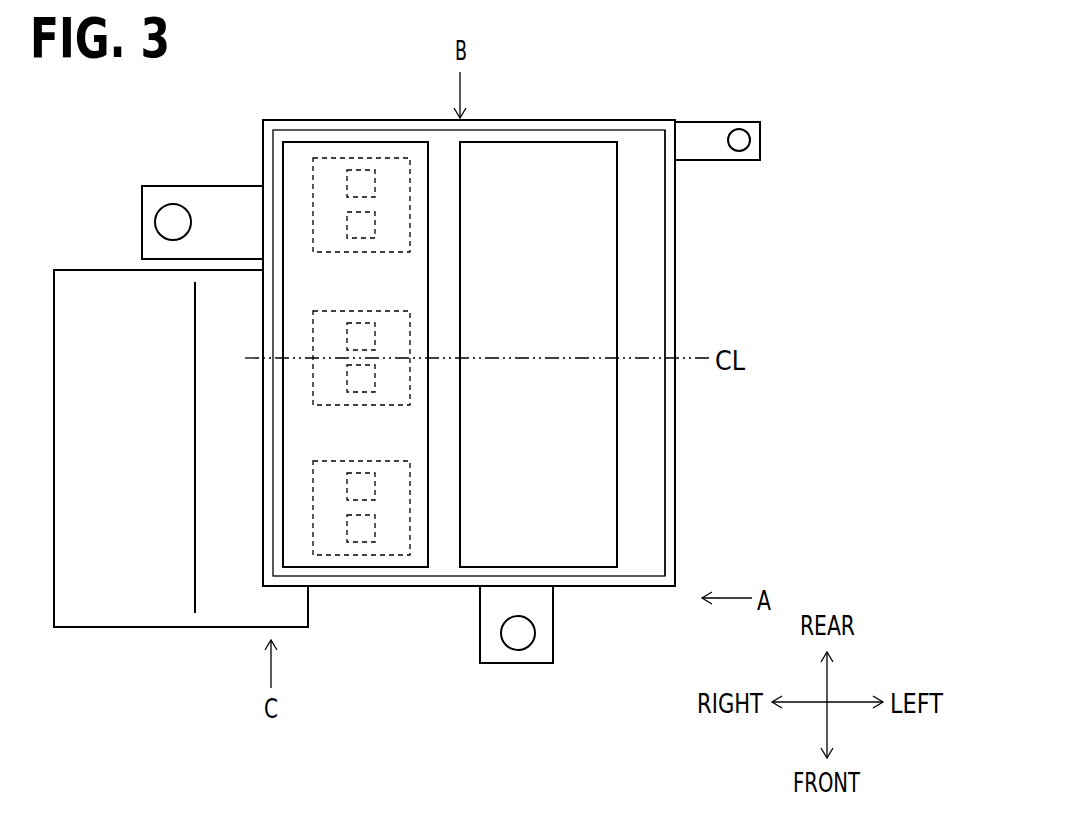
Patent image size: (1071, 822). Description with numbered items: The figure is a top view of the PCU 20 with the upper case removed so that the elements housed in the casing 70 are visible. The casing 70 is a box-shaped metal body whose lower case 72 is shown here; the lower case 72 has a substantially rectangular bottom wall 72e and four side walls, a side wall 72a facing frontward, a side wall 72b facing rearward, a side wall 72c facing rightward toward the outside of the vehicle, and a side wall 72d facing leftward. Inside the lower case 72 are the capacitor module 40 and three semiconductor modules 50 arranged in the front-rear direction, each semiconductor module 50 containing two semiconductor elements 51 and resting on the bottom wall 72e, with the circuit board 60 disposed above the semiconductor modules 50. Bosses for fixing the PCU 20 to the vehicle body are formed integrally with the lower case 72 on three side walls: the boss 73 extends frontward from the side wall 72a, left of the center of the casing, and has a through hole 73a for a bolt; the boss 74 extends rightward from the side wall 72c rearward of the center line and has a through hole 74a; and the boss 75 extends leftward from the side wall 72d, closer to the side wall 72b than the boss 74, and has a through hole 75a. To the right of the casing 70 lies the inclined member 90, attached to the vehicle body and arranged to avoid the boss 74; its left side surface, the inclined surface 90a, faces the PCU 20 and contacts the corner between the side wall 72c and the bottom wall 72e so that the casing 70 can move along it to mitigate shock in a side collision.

The PCU 20 is at (788, 124).
The capacitor module 40 is at (617, 307).
The semiconductor module 50 is at (384, 394).
The semiconductor element 51 is at (346, 543).
The circuit board 60 is at (375, 567).
The casing 70 is at (531, 353).
The lower case 72 is at (675, 447).
The side wall 72a is at (644, 586).
The side wall 72b is at (528, 125).
The side wall 72c is at (263, 143).
The side wall 72d is at (670, 248).
The bottom wall 72e is at (648, 527).
The boss 73 is at (520, 635).
The through hole 73a is at (507, 632).
The boss 74 is at (185, 188).
The through hole 74a is at (180, 210).
The boss 75 is at (728, 147).
The through hole 75a is at (740, 138).
The inclined member 90 is at (181, 486).
The inclined surface 90a is at (218, 605).